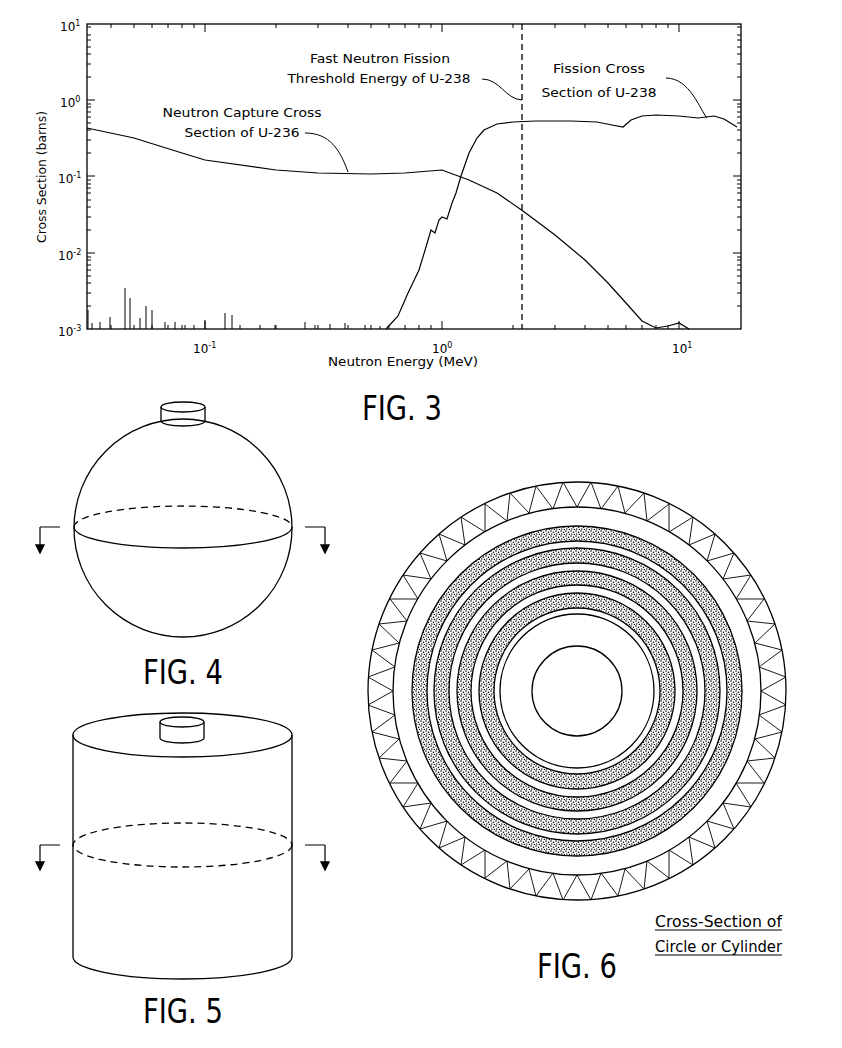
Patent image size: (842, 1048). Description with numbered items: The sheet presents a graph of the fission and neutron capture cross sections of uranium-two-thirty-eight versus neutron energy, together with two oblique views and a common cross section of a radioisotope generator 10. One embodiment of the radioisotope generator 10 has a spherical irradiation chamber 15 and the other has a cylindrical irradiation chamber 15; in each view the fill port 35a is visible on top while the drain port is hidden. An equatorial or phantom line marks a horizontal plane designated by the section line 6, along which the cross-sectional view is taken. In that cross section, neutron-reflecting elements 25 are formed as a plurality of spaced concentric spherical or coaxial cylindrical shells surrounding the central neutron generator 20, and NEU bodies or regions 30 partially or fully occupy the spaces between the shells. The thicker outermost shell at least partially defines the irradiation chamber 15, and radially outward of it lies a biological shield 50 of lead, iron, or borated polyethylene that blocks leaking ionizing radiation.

In FIG. 4, the radioisotope generator 10 is at (107, 628).
In FIG. 5, the radioisotope generator 10 is at (86, 980).
In FIG. 6, the radioisotope generator 10 is at (493, 909).
In FIG. 4, the irradiation chamber 15 is at (268, 461).
In FIG. 5, the irradiation chamber 15 is at (292, 787).
In FIG. 6, the irradiation chamber 15 is at (627, 502).
In FIG. 6, the neutron generator 20 is at (578, 648).
In FIG. 6, the neutron-reflecting elements 25 is at (697, 568).
In FIG. 6, the NEU bodies or regions 30 is at (711, 584).
In FIG. 4, the fill port 35a is at (175, 407).
In FIG. 5, the fill port 35a is at (186, 722).
In FIG. 6, the biological shield 50 is at (513, 489).
In FIG. 4, the section line 6 is at (182, 550).
In FIG. 5, the section line 6 is at (182, 867).